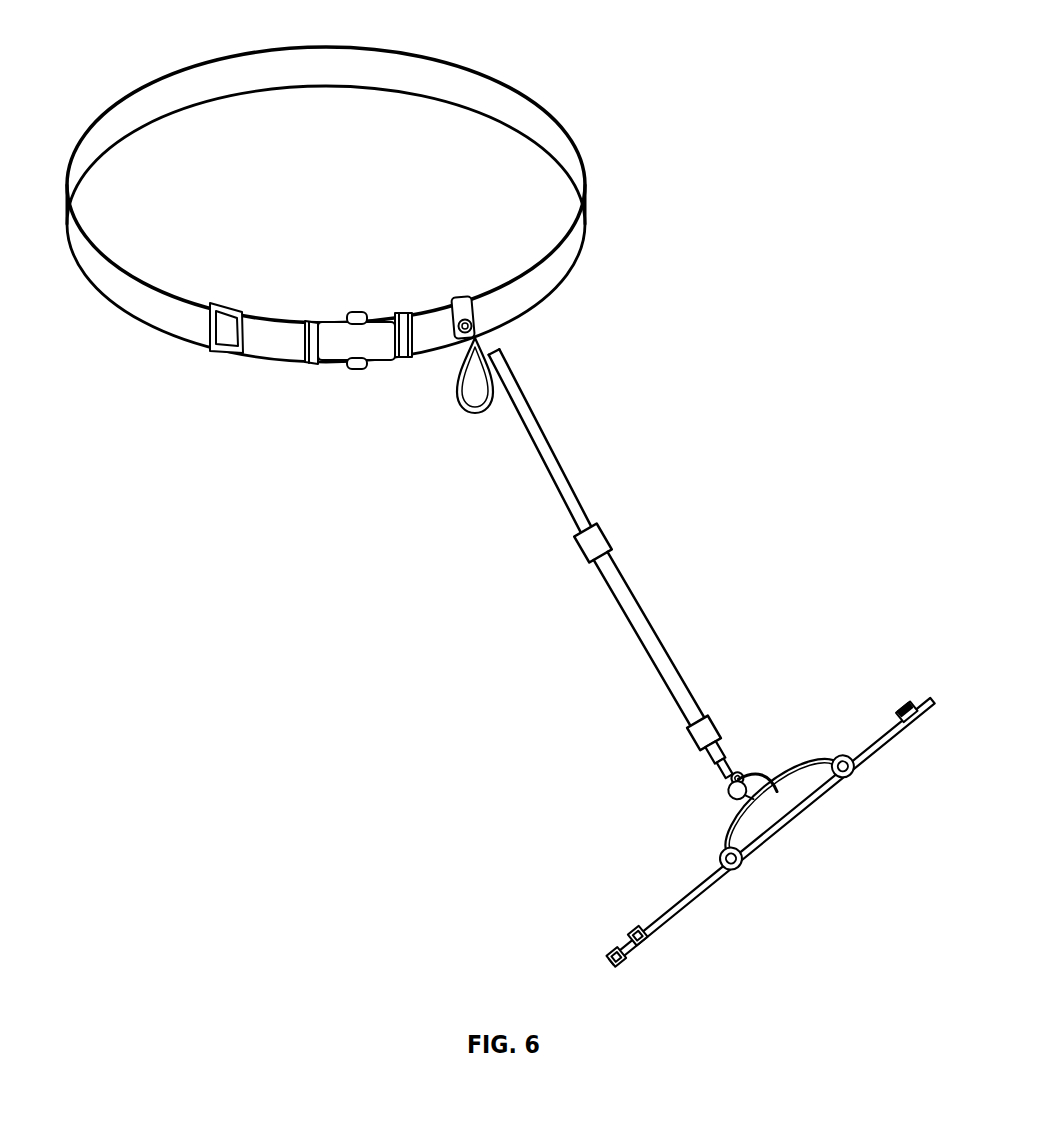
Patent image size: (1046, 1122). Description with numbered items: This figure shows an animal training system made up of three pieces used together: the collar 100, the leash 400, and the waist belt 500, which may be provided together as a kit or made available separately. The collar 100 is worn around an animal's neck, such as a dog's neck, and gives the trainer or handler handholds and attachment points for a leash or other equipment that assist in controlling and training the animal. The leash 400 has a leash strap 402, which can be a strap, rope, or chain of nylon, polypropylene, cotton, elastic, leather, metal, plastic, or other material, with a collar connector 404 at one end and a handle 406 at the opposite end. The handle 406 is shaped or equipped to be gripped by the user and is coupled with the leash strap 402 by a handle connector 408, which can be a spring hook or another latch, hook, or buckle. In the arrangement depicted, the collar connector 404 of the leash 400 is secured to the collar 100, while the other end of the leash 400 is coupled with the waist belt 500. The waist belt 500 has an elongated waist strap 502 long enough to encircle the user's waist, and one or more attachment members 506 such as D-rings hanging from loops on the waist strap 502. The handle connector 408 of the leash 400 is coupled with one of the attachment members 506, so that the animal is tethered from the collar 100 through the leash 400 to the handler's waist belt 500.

The collar 100 is at (701, 793).
The leash 400 is at (534, 580).
The leash strap 402 is at (573, 512).
The collar connector 404 is at (722, 771).
The handle 406 is at (477, 417).
The handle connector 408 is at (466, 336).
The waist belt 500 is at (342, 259).
The waist strap 502 is at (478, 89).
The attachment members 506 is at (482, 317).